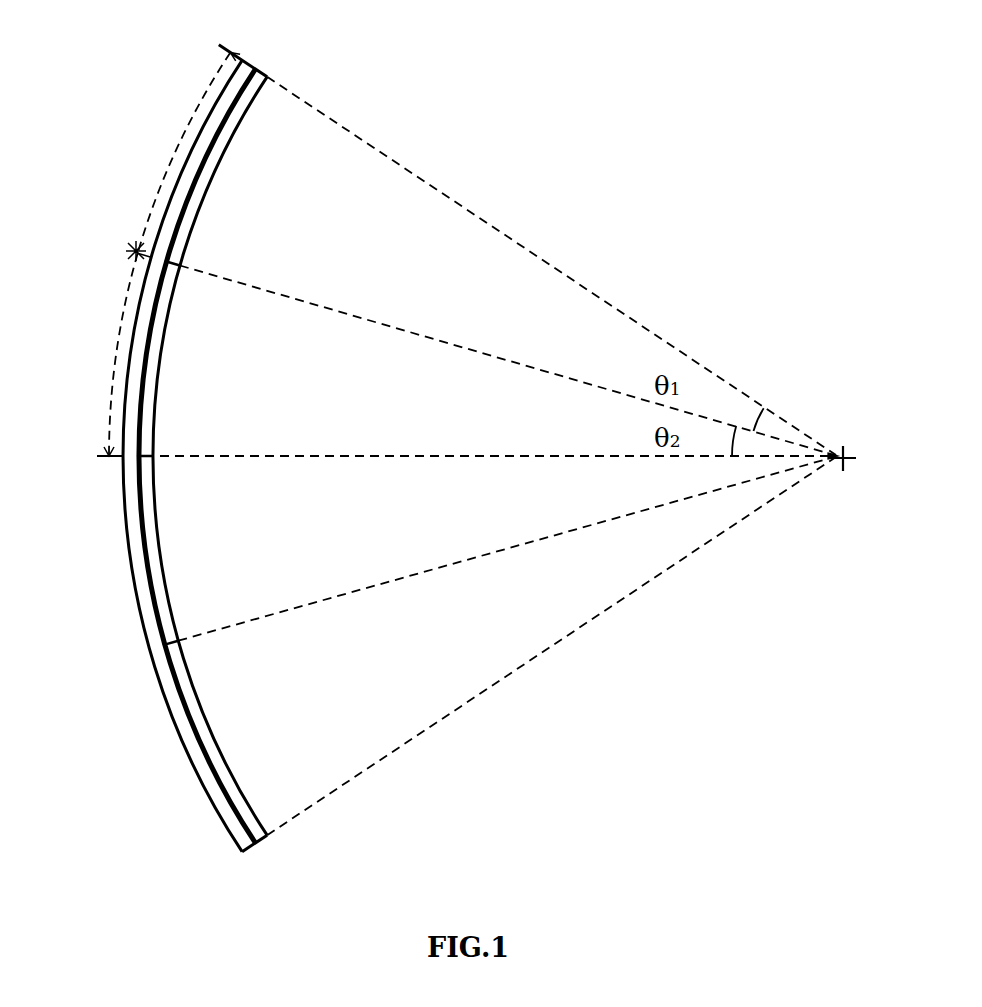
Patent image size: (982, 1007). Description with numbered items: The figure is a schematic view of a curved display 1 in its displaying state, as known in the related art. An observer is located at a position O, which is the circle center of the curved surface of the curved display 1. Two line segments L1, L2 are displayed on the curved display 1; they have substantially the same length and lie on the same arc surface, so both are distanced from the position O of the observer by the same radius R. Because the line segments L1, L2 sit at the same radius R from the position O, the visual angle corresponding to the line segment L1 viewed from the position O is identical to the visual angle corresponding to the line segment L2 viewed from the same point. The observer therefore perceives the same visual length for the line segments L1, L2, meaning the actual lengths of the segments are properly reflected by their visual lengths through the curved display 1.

The curved display 1 is at (481, 138).
The radius R is at (551, 266).
The line segment L1 is at (178, 157).
The line segment L2 is at (108, 354).
The position O is at (842, 444).